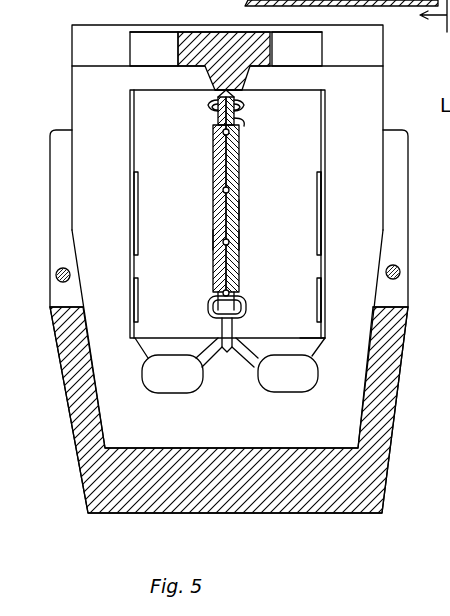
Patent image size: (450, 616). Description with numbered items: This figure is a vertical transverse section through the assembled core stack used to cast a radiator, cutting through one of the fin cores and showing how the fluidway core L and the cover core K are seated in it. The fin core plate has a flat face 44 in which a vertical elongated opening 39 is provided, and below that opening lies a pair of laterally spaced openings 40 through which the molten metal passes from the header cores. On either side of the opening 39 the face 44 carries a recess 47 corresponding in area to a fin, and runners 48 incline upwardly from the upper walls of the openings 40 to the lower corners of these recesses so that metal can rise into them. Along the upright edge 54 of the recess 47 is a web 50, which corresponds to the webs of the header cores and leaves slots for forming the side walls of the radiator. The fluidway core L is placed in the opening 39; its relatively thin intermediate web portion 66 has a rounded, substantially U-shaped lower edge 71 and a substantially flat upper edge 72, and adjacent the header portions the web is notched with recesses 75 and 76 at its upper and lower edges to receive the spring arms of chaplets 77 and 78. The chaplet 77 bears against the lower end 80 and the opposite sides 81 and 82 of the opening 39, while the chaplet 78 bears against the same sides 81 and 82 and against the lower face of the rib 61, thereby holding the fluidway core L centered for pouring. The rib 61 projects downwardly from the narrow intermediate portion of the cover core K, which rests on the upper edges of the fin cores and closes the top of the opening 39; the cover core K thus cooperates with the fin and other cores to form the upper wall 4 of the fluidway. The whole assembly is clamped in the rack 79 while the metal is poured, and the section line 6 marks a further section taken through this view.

The upper wall of the fluidway 4 is at (325, 19).
The section line 6- 6 is at (306, 319).
The cover core K is at (213, 58).
The vertical elongated opening 39 is at (241, 362).
The laterally spaced openings 40 is at (291, 365).
The face of fin core plate 44 is at (370, 99).
The recess 47 is at (307, 197).
The runners 48 is at (318, 359).
The web 50 is at (321, 165).
The upright edge of recess 54 is at (322, 119).
The rib 61 is at (205, 77).
The intermediate web portion 66 is at (241, 170).
The lower edge of web 71 is at (240, 318).
The upper edge of web 72 is at (240, 97).
The recess 75 is at (250, 270).
The recess 76 is at (245, 124).
The chaplet 77 is at (250, 292).
The chaplet 78 is at (207, 113).
The rack 79 is at (389, 388).
The lower end of opening 80 is at (220, 356).
The side of opening 81 is at (212, 238).
The side of opening 82 is at (249, 238).
The fluidway core L is at (246, 210).